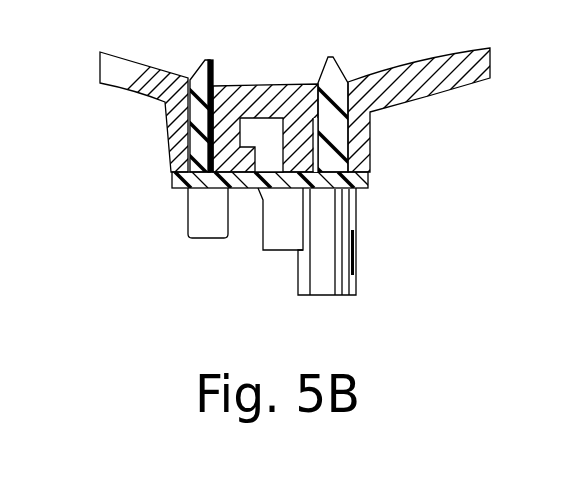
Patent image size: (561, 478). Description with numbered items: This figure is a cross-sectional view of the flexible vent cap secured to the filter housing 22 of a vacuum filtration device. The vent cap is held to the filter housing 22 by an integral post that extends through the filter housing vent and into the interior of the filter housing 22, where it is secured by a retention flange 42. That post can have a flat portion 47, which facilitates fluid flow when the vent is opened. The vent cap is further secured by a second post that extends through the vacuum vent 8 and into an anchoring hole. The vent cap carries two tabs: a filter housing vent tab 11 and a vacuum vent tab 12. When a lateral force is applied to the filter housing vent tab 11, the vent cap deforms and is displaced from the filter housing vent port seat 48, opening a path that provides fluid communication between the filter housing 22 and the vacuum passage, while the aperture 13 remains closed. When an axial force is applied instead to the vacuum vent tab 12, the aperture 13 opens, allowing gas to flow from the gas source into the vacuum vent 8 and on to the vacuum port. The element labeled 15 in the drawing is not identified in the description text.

The filter housing 22 is at (417, 103).
The retention flange 42 is at (197, 61).
The flat portion 47 is at (212, 85).
The aperture 13 is at (266, 133).
The vacuum vent 8 is at (337, 138).
The filter housing vent tab 11 is at (198, 240).
The filter housing vent port seat 48 is at (213, 172).
The vacuum vent tab 12 is at (283, 252).
The terminal pin 15 is at (343, 295).